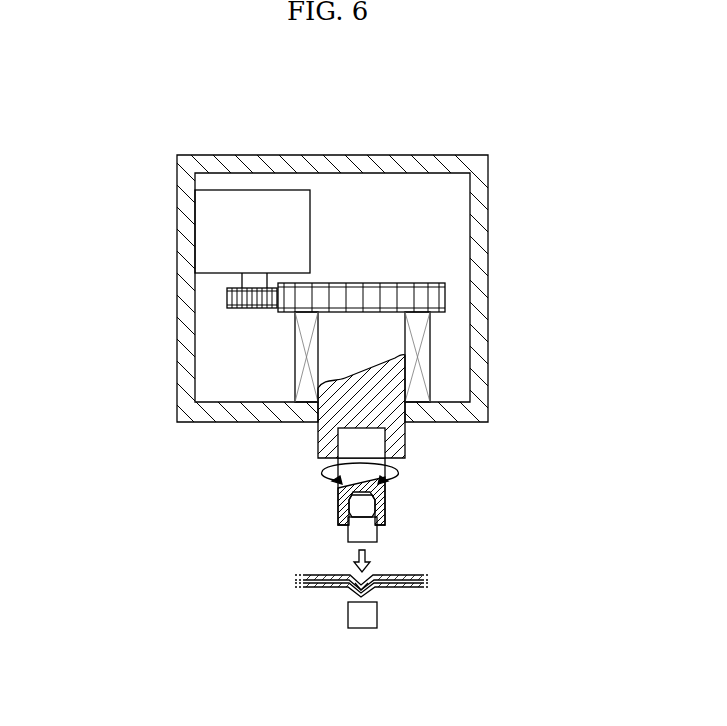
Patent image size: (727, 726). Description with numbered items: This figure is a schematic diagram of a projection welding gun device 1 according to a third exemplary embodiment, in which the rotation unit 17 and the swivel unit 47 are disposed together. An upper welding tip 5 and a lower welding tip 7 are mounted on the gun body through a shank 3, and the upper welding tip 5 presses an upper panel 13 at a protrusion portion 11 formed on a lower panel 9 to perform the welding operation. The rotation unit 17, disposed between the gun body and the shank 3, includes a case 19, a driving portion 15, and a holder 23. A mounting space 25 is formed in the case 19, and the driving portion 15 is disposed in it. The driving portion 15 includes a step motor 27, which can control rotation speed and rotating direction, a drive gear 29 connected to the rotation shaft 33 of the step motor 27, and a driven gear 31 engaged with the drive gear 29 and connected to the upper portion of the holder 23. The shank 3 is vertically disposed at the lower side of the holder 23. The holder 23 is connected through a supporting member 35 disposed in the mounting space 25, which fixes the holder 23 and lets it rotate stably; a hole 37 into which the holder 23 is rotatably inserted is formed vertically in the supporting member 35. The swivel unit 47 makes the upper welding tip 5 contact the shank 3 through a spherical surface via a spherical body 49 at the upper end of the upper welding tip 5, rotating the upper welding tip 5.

The projection welding gun device 1 is at (124, 114).
The shank 3 is at (338, 494).
The upper welding tip 5 is at (378, 530).
The lower welding tip 7 is at (362, 630).
The lower panel 9 is at (410, 590).
The protrusion portion 11 is at (372, 582).
The upper panel 13 is at (306, 577).
The driving portion 15 is at (346, 244).
The rotation unit 17 is at (156, 346).
The case 19 is at (383, 156).
The holder 23 is at (385, 340).
The mounting space 25 is at (407, 257).
The step motor 27 is at (250, 200).
The drive gear 29 is at (232, 298).
The driven gear 31 is at (445, 293).
The rotation shaft 33 is at (243, 288).
The supporting member 35 is at (303, 366).
The hole 37 is at (318, 355).
The swivel unit 47 is at (392, 500).
The spherical body 49 is at (350, 508).